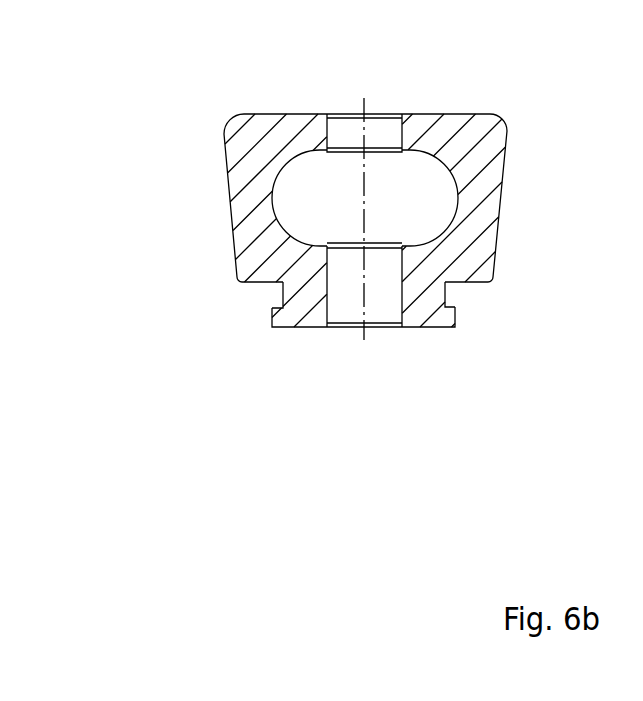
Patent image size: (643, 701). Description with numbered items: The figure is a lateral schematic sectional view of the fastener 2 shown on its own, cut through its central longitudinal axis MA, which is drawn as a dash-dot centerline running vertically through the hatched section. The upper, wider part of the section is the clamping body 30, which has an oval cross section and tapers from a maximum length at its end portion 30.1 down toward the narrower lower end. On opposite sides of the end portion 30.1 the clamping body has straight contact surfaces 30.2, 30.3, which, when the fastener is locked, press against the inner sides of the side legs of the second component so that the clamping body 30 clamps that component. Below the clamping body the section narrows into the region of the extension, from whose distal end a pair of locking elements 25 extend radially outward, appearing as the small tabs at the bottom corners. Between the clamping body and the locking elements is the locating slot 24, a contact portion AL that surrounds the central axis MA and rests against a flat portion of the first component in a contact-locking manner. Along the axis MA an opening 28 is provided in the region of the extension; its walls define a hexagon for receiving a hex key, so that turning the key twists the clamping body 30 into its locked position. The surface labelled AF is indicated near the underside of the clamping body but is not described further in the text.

The fastener 2 is at (245, 238).
The locating slot 24 is at (480, 298).
The locking elements 25 is at (285, 318).
The opening 28 is at (344, 337).
The clamping body 30 is at (209, 169).
The end portion 30.1 is at (238, 93).
The straight contact surface 30.2 is at (208, 122).
The straight contact surface 30.3 is at (524, 120).
The contact portion AL is at (214, 274).
The support surface AF is at (240, 294).
The central longitudinal axis MA is at (369, 203).